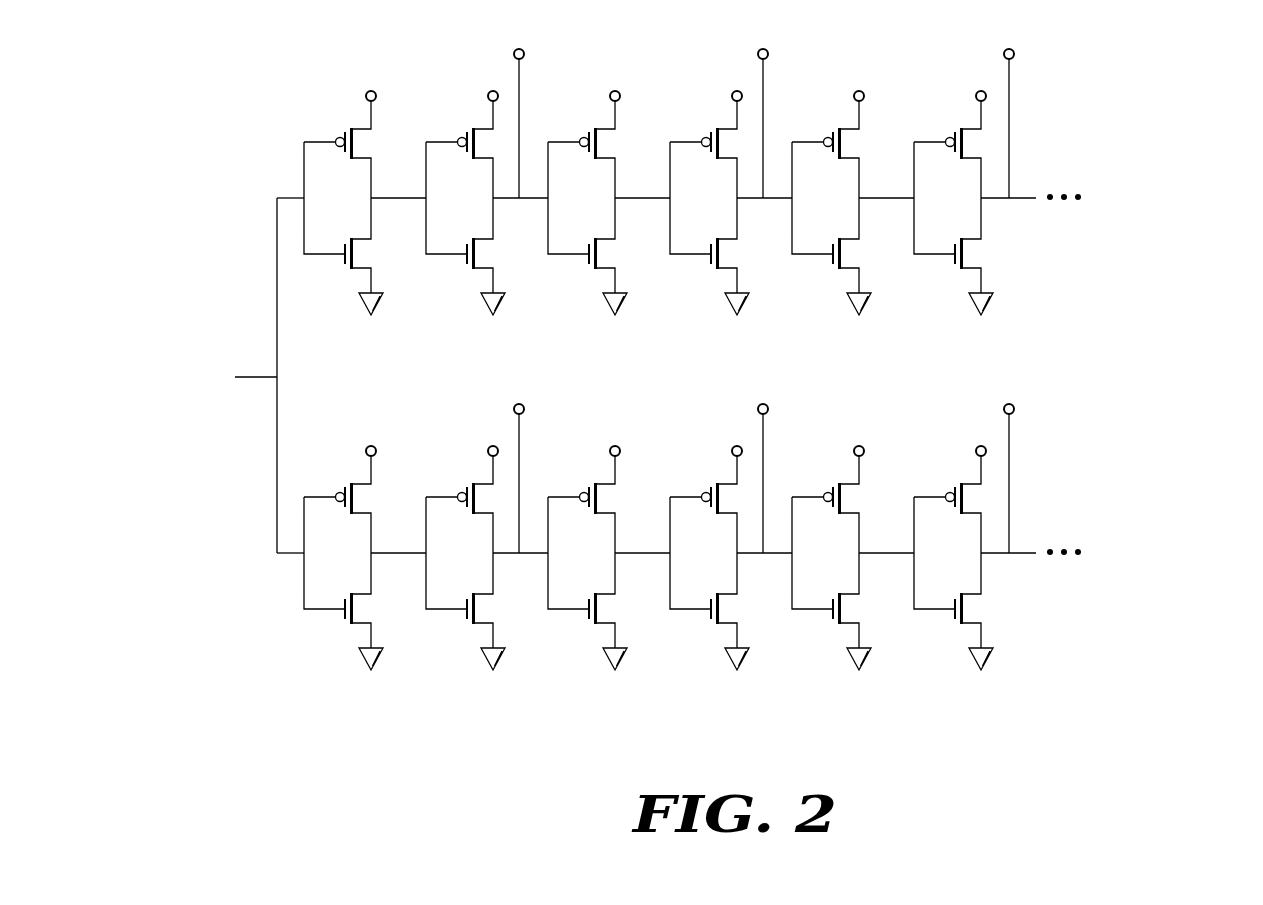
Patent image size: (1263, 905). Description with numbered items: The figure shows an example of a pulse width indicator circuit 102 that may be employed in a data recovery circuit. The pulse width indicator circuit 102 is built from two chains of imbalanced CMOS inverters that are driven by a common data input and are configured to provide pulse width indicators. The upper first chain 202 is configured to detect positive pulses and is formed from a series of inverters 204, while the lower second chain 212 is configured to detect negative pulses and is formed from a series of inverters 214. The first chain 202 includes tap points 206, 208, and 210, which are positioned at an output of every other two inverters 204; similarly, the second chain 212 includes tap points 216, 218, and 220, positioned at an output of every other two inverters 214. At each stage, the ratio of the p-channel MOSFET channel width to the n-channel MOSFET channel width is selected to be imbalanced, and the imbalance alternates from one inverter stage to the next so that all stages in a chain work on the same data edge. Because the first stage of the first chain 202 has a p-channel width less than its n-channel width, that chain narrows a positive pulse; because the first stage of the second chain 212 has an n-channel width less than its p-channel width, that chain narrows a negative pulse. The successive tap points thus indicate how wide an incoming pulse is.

The pulse width indicator circuit 102 is at (1179, 66).
The first chain 202 is at (1069, 174).
The inverters 204 is at (266, 192).
The tap point 206 is at (526, 54).
The tap point 208 is at (770, 54).
The tap point 210 is at (1016, 54).
The second chain 212 is at (1069, 529).
The inverters 214 is at (266, 547).
The tap point 216 is at (526, 409).
The tap point 218 is at (770, 409).
The tap point 220 is at (1016, 409).